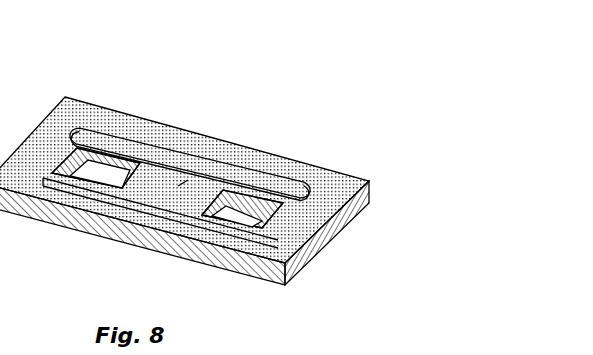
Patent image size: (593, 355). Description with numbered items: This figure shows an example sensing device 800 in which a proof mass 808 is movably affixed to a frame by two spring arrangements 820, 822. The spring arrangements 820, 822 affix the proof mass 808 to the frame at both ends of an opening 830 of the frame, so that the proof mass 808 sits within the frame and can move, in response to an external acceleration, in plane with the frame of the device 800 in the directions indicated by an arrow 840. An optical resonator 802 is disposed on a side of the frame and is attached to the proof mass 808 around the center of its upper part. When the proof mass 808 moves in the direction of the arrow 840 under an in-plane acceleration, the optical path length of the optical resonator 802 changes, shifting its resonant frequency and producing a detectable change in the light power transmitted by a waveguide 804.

The sensing device 800 is at (185, 171).
The optical resonator 802 is at (185, 164).
The waveguide 804 is at (78, 118).
The proof mass 808 is at (153, 198).
The spring arrangement 820 is at (68, 190).
The spring arrangement 822 is at (190, 172).
The opening 830 is at (245, 220).
The arrow 840 is at (183, 183).